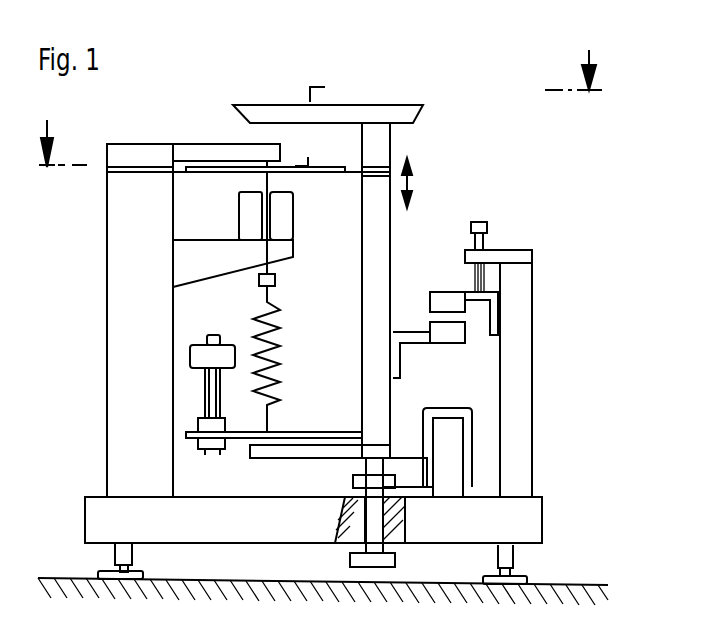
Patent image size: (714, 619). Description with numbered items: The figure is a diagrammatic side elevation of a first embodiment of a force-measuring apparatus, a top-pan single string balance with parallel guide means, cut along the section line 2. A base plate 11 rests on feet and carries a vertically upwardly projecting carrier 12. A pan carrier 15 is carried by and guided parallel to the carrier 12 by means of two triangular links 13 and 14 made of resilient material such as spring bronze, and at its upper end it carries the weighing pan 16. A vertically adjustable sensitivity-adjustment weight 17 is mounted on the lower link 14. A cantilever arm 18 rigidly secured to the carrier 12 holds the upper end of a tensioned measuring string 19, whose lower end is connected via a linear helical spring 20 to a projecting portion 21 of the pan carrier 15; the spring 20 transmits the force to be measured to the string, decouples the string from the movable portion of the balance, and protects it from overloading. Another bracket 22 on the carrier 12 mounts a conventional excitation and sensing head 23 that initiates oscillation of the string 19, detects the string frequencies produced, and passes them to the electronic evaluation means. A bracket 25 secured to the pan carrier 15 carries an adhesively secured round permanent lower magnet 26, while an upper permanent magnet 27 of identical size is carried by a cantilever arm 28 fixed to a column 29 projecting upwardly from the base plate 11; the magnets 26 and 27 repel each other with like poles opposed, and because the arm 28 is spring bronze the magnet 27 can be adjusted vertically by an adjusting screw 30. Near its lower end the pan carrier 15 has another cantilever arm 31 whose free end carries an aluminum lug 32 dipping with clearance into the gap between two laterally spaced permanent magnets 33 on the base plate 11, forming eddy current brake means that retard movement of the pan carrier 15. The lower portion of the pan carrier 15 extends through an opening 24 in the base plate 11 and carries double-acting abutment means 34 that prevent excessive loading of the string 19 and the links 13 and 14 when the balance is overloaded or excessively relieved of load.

The section line 2 is at (320, 127).
The base plate 11 is at (220, 528).
The carrier 12 is at (125, 374).
The upper triangular link 13 is at (327, 167).
The lower triangular link 14 is at (243, 438).
The pan carrier 15 is at (362, 383).
The weighing pan 16 is at (407, 115).
The sensitivity-adjustment weight 17 is at (201, 352).
The cantilever arm 18 is at (198, 149).
The measuring string 19 is at (268, 268).
The linear helical spring 20 is at (283, 323).
The projecting portion 21 is at (272, 458).
The bracket 22 is at (200, 247).
The excitation and sensing head 23 is at (287, 218).
The opening 24 is at (405, 543).
The bracket 25 is at (420, 337).
The lower permanent magnet 26 is at (447, 328).
The upper permanent magnet 27 is at (445, 305).
The cantilever arm 28 is at (462, 293).
The column 29 is at (532, 379).
The adjusting screw 30 is at (487, 227).
The cantilever arm 31 is at (407, 475).
The aluminum lug 32 is at (448, 413).
The permanent magnets 33 is at (450, 480).
The double-acting abutment means 34 is at (350, 561).